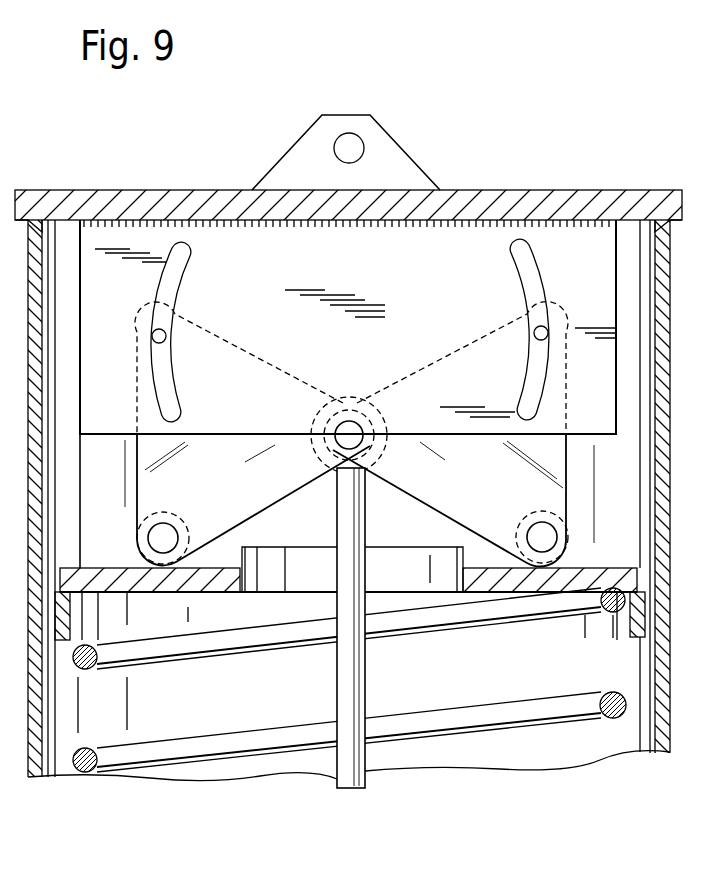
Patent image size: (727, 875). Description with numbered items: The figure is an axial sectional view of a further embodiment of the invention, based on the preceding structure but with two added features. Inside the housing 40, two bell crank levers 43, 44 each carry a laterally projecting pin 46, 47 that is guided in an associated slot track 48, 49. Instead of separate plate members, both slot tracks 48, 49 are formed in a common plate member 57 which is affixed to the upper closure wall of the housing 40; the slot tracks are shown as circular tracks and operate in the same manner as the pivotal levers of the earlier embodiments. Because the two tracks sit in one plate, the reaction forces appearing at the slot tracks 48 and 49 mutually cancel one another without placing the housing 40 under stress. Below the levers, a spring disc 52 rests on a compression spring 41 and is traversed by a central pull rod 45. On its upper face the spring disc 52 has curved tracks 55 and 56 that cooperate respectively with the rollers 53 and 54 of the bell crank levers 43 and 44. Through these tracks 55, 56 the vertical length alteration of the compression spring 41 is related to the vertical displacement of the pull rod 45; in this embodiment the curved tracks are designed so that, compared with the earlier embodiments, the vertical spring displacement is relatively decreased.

The housing 40 is at (667, 752).
The compression spring 41 is at (210, 752).
The bell crank lever 43 is at (242, 482).
The bell crank lever 44 is at (484, 482).
The pull rod 45 is at (350, 789).
The pin 46 is at (152, 334).
The pin 47 is at (548, 334).
The slot track 48 is at (176, 272).
The slot track 49 is at (520, 273).
The spring disc 52 is at (461, 567).
The roller 53 is at (138, 535).
The roller 54 is at (568, 528).
The curved track 55 is at (116, 567).
The curved track 56 is at (585, 568).
The common plate member 57 is at (256, 243).